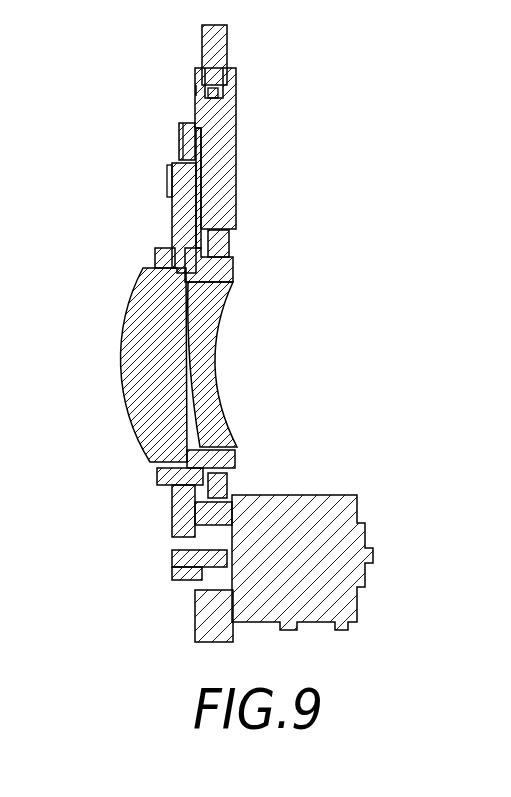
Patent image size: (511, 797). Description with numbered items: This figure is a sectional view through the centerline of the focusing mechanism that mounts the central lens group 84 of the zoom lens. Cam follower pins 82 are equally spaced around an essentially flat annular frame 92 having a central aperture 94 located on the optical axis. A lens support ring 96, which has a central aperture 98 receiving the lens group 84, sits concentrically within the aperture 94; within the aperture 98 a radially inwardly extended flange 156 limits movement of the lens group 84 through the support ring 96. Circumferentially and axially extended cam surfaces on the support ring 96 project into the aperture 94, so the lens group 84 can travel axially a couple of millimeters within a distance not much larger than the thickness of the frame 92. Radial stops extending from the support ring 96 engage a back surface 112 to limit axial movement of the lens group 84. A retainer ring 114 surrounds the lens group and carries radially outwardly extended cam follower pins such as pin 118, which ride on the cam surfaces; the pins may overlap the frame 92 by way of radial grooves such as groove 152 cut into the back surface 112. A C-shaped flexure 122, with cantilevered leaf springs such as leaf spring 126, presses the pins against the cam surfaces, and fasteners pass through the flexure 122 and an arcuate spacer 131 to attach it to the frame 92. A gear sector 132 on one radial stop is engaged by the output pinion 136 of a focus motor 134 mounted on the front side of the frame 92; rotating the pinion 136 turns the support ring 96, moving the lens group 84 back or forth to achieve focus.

The cam follower pins 82 is at (227, 37).
The central lens group 84 is at (118, 333).
The annular frame 92 is at (266, 148).
The central aperture 94 is at (229, 230).
The lens support ring 96 is at (229, 229).
The central aperture 98 is at (237, 468).
The back surface 112 is at (196, 85).
The retainer ring 114 is at (155, 260).
The cam follower pin 118 is at (121, 218).
The C-shaped flexure 122 is at (178, 132).
The leaf spring 126 is at (168, 223).
The arcuate spacer 131 is at (195, 118).
The gear sector 132 is at (172, 508).
The focus motor 134 is at (358, 505).
The output pinion 136 is at (172, 568).
The radial groove 152 is at (202, 177).
The radially inwardly extended flange 156 is at (227, 483).